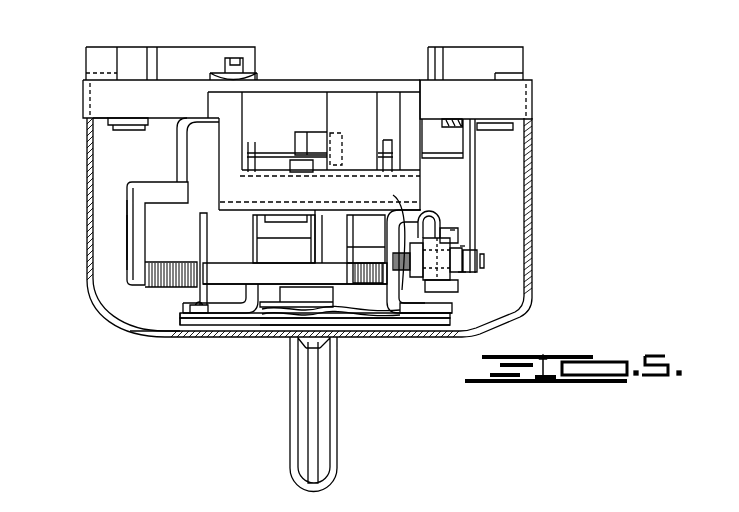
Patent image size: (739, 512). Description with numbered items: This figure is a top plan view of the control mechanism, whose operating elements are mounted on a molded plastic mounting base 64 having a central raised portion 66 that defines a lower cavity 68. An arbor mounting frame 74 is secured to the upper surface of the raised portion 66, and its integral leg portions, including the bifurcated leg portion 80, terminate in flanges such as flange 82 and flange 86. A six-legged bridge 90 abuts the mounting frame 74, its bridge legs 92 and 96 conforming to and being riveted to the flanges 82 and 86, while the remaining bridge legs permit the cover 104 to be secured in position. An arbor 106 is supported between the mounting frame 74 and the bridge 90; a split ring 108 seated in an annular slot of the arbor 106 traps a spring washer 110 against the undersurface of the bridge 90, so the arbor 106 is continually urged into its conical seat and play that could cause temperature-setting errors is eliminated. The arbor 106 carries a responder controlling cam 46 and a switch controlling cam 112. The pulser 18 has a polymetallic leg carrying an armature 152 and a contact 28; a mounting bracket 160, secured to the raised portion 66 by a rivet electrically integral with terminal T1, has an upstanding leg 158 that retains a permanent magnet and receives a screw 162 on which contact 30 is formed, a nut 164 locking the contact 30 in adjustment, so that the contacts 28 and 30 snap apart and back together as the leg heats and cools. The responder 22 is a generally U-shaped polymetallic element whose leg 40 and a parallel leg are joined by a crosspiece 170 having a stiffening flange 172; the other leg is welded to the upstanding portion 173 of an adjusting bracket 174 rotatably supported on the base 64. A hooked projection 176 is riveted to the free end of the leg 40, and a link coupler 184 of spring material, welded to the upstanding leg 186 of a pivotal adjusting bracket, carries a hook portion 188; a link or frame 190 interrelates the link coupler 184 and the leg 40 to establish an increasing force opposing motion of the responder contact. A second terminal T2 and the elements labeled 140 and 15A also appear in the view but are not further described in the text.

The cover 104 is at (526, 274).
The mounting base 64 is at (167, 90).
The lower cavity 68 is at (243, 110).
The central raised portion 66 is at (267, 182).
The arbor mounting frame 74 is at (410, 201).
The bracket 140 is at (497, 167).
The upstanding leg 158 is at (477, 221).
The upstanding portion 173 is at (183, 150).
The adjusting bracket 174 is at (163, 130).
The terminal T2 is at (130, 130).
The crosspiece 170 is at (147, 237).
The stiffening flange 172 is at (133, 258).
The responder 22 is at (126, 237).
The hooked projection 176 is at (167, 293).
The leg portion 40 is at (140, 303).
The link or frame 190 is at (197, 258).
The hook portion 188 is at (203, 274).
The upstanding leg 186 is at (318, 272).
The switch controlling cam 112 is at (352, 272).
The link coupler 184 is at (262, 244).
The terminal T1 is at (329, 236).
The responder controlling cam 46 is at (364, 242).
The split ring 108 is at (336, 300).
The screw 162 is at (400, 294).
The contact 28 is at (475, 244).
The leg portion 80 is at (403, 216).
The nut 164 is at (395, 214).
The mounting bracket 160 is at (419, 218).
The armature 152 is at (477, 257).
The contact 30 is at (467, 273).
The pulser 18 is at (455, 233).
The link 15A is at (462, 247).
The flange 82 is at (228, 314).
The bridge 90 is at (255, 322).
The bridge leg 92 is at (188, 320).
The spring washer 110 is at (275, 330).
The flange 86 is at (417, 312).
The bridge leg 96 is at (452, 327).
The arbor 106 is at (330, 452).